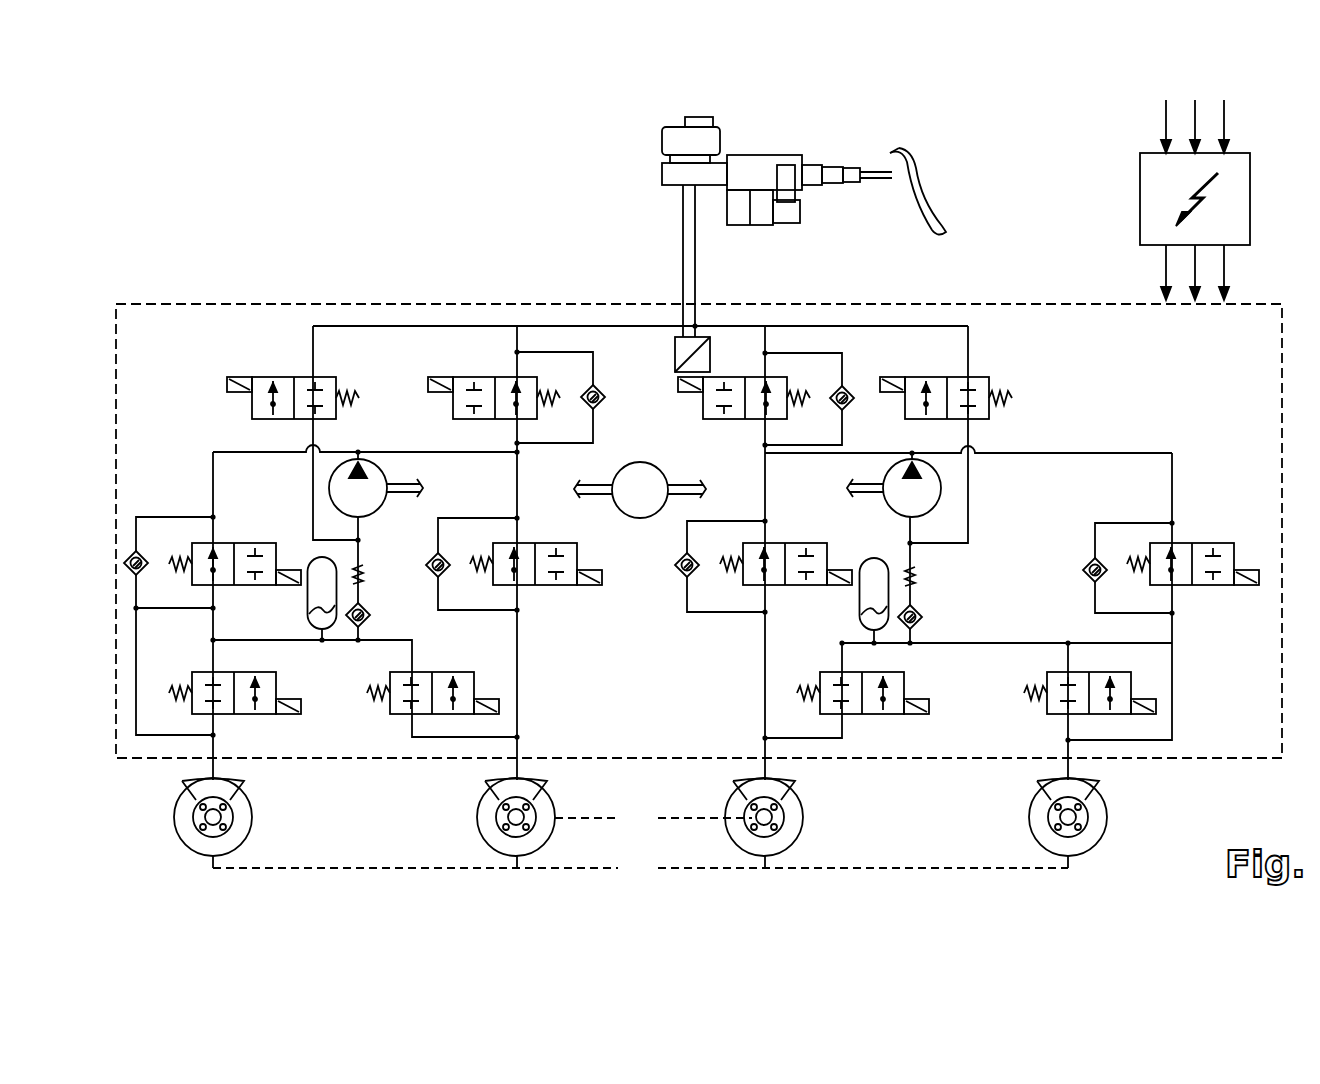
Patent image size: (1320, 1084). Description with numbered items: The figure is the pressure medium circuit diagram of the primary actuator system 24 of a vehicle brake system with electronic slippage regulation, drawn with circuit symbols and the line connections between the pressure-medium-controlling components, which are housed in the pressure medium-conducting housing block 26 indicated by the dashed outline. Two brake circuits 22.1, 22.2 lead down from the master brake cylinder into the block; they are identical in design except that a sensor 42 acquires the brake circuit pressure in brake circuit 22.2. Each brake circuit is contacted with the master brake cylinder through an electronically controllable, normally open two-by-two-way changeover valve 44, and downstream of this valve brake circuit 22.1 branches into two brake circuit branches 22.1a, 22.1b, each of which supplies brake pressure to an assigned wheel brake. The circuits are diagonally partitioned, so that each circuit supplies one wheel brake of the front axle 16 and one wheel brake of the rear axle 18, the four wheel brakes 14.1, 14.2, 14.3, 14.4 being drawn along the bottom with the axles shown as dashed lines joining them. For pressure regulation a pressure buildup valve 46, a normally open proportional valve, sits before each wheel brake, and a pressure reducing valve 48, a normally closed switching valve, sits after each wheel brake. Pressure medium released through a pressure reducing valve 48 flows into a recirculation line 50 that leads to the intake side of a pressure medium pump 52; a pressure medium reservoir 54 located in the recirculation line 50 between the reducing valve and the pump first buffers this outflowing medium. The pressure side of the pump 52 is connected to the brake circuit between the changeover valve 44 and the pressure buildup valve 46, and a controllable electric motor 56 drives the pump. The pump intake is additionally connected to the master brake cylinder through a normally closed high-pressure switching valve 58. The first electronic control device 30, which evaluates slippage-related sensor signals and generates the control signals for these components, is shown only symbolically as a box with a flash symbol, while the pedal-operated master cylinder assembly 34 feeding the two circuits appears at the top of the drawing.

The wheel brake 14.1 is at (546, 790).
The wheel brake 14.2 is at (794, 790).
The wheel brake 14.3 is at (243, 790).
The wheel brake 14.4 is at (1098, 790).
The front axle 16 is at (656, 836).
The rear axle 18 is at (656, 886).
The brake circuit 22.1 is at (683, 250).
The brake circuit branch 22.1a is at (403, 450).
The brake circuit branch 22.1b is at (519, 458).
The brake circuit 22.2 is at (695, 250).
The primary actuator system 24 is at (258, 196).
The housing block 26 is at (182, 303).
The first electronic control device 30 is at (1250, 197).
The brake pedal unit with master cylinder 34 is at (823, 160).
The sensor 42 is at (675, 353).
The changeover valve 44 is at (462, 375).
The pressure buildup valve 46 is at (245, 542).
The pressure reducing valve 48 is at (205, 671).
The recirculation line 50 is at (312, 642).
The pressure medium pump 52 is at (383, 503).
The pressure medium reservoir 54 is at (308, 600).
The electric motor 56 is at (640, 462).
The high-pressure switching valve 58 is at (262, 375).